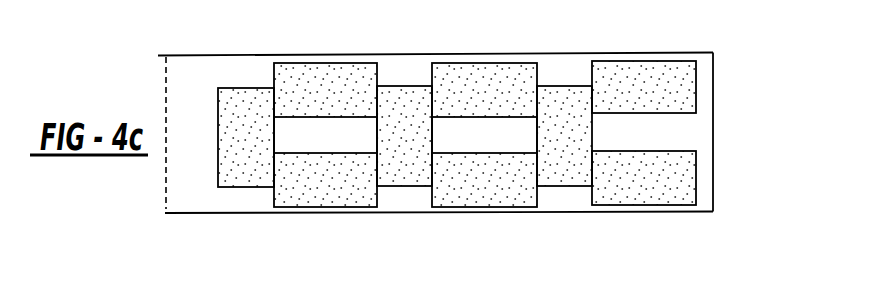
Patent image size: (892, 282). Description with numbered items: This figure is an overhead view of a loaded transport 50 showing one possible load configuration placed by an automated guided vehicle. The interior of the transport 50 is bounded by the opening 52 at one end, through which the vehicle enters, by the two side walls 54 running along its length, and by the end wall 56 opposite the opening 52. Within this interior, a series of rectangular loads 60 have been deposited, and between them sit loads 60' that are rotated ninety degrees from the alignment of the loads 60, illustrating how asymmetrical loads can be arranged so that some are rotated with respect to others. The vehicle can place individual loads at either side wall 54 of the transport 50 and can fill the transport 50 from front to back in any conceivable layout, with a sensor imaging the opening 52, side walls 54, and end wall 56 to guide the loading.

The transport 50 is at (276, 281).
The opening 52 is at (165, 192).
The side walls 54 is at (493, 265).
The end wall 56 is at (713, 160).
The loads 60 is at (564, 141).
The rotated loads 60' is at (485, 184).